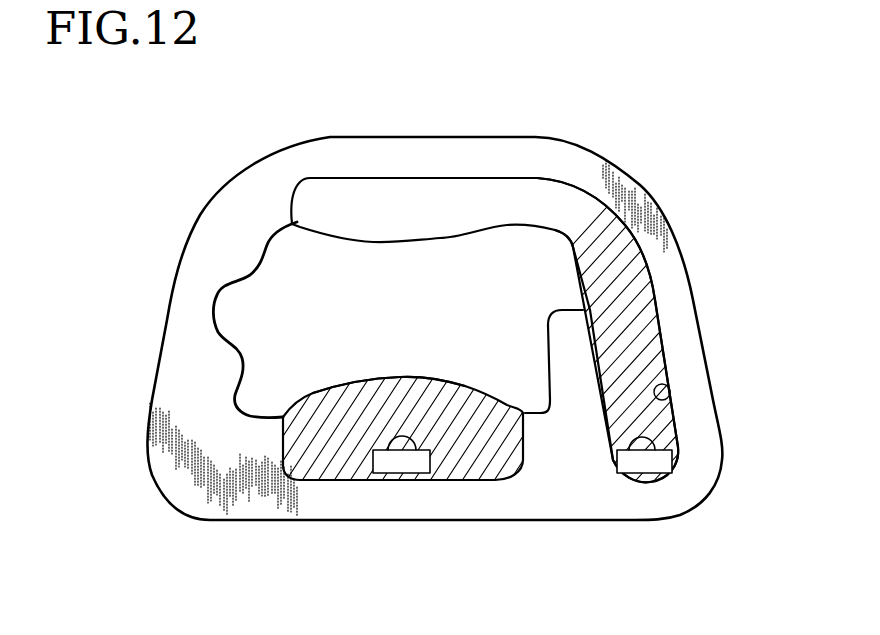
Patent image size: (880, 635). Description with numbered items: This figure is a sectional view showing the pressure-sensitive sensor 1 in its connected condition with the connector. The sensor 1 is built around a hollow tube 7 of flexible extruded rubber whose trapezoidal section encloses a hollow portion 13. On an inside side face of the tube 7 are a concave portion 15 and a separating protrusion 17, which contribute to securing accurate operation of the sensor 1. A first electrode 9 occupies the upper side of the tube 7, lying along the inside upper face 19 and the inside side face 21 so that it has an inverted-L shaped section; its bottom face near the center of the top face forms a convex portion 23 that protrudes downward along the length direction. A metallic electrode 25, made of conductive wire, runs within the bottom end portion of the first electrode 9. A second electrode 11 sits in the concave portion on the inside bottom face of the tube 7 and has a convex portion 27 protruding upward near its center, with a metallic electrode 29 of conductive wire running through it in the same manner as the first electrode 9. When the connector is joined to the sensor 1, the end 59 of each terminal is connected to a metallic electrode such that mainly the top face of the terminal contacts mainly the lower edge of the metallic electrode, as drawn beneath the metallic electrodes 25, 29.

The pressure-sensitive sensor 1 is at (214, 186).
The hollow tube 7 is at (668, 260).
The first electrode 9 is at (643, 353).
The second electrode 11 is at (310, 463).
The hollow portion 13 is at (540, 272).
The concave portion 15 is at (214, 320).
The separating protrusion 17 is at (575, 348).
The inside upper face 19 is at (455, 182).
The inside side face 21 is at (672, 392).
The convex portion 23 is at (400, 241).
The metallic electrode 25 is at (655, 434).
The convex portion 27 is at (413, 378).
The metallic electrode 29 is at (403, 450).
The end of terminal 59 is at (388, 467).